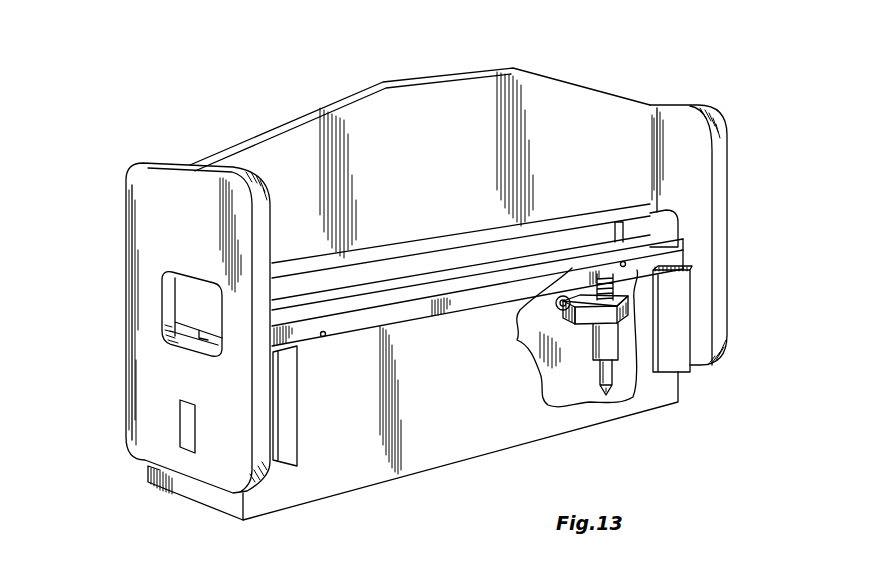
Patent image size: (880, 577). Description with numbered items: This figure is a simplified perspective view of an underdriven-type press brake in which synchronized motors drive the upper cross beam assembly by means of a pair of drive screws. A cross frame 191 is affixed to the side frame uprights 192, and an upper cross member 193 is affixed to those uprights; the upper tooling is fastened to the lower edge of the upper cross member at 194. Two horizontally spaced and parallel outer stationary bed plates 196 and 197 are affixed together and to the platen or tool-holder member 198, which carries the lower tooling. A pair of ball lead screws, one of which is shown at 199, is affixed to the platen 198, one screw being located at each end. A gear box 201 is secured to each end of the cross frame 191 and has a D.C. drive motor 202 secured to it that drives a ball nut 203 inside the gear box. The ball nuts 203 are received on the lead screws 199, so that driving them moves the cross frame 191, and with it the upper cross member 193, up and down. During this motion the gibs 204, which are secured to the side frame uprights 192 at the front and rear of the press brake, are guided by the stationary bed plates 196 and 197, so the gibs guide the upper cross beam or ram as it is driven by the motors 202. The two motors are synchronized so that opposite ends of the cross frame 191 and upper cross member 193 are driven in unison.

The cross frame 191 is at (183, 424).
The side frame uprights 192 is at (722, 150).
The upper cross member 193 is at (560, 97).
The lower edge of the upper cross member 194 is at (413, 256).
The outer stationary bed plate 196 is at (380, 455).
The outer stationary bed plate 197 is at (537, 320).
The platen 198 is at (445, 290).
The ball lead screw 199 is at (652, 280).
The gear box 201 is at (622, 315).
The D.C. drive motor 202 is at (570, 283).
The ball nut 203 is at (577, 310).
The gibs 204 is at (675, 358).